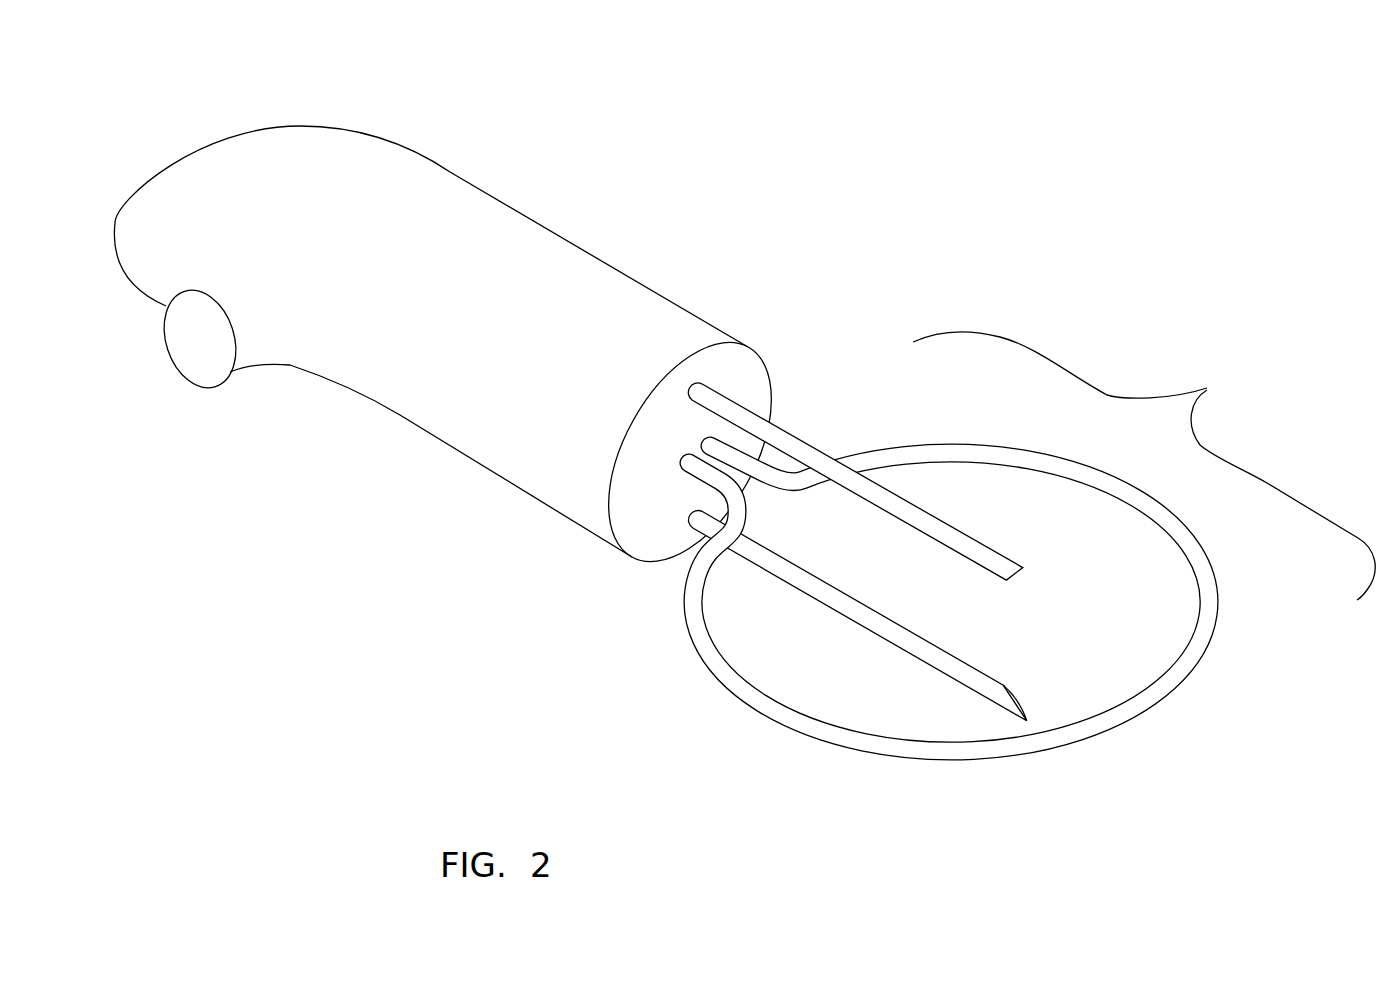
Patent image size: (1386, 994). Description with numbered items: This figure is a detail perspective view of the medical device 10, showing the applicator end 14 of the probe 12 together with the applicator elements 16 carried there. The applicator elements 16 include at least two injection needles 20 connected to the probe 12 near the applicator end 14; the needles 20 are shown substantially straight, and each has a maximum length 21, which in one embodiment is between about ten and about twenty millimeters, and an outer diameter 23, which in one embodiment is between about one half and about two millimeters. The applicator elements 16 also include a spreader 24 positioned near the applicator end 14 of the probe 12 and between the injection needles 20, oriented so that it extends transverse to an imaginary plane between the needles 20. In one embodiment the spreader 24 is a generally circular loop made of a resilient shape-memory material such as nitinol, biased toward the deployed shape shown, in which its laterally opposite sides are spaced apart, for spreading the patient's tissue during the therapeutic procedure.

The device 10 is at (690, 95).
The probe 12 is at (524, 380).
The applicator end 14 is at (572, 468).
The applicator elements 16 is at (1144, 466).
The injection needles 20 is at (823, 604).
The maximum length 21 is at (695, 537).
The outer diameter 23 is at (964, 618).
The spreader 24 is at (1177, 670).